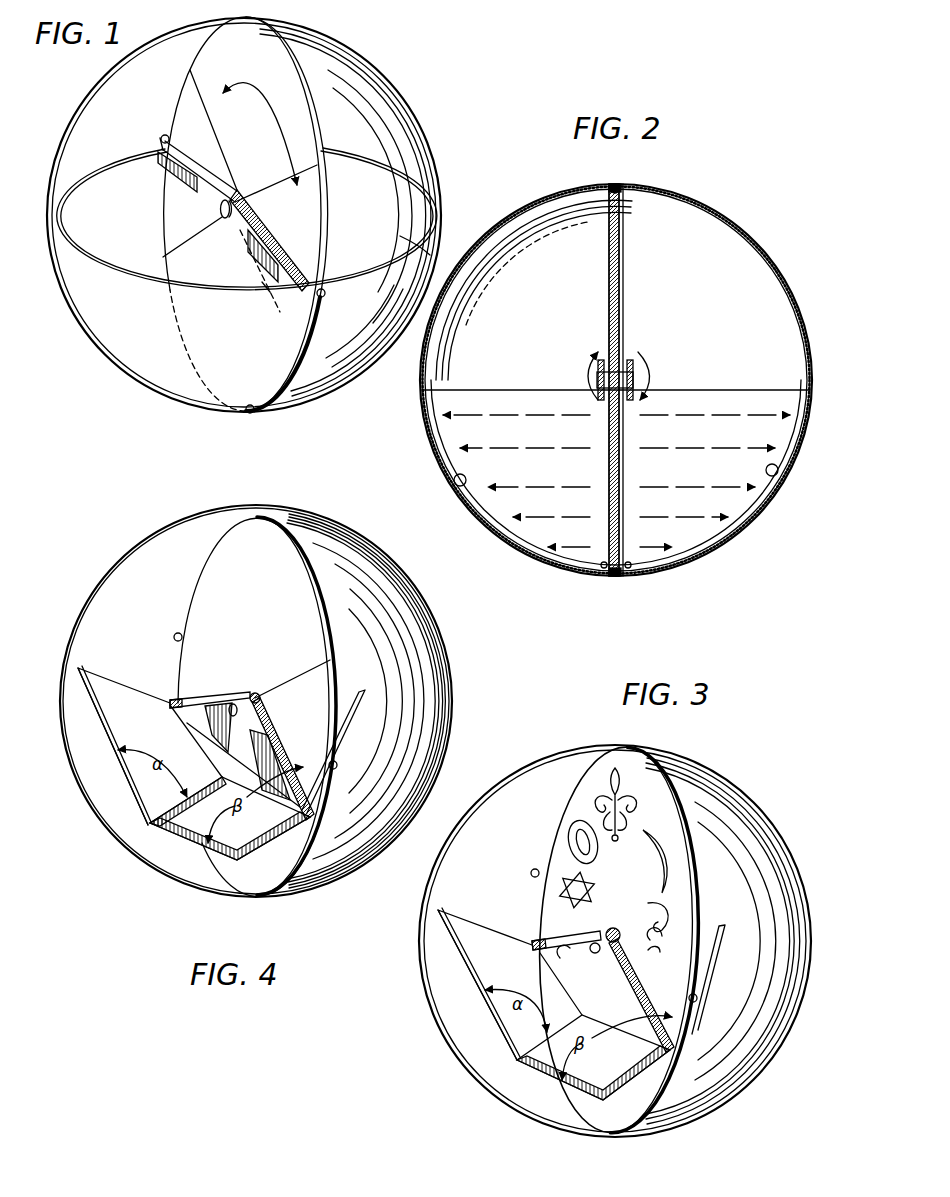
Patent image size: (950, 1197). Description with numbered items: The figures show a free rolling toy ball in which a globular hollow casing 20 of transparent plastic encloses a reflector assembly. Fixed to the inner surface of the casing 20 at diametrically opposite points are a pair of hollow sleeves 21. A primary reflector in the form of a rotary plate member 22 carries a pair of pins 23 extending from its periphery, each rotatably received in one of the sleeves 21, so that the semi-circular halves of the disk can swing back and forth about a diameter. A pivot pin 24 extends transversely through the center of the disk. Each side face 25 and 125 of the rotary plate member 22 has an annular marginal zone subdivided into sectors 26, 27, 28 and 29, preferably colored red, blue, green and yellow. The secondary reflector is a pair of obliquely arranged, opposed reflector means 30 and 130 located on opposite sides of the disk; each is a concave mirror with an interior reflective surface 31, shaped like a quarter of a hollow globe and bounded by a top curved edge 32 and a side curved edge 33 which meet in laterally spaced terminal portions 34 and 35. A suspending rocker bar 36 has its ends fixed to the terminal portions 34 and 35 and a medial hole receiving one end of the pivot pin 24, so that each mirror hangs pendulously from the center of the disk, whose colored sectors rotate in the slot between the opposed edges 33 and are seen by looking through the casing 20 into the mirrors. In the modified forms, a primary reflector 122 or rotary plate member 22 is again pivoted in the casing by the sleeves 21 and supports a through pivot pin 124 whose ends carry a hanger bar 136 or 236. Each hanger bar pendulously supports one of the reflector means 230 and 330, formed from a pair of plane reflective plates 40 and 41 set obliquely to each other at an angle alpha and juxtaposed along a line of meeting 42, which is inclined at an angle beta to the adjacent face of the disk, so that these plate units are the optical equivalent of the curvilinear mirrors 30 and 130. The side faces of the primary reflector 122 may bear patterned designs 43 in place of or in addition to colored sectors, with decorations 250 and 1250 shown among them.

In FIG. 1, the hollow casing 20 is at (427, 121).
In FIG. 2, the hollow casing 20 is at (720, 212).
In FIG. 4, the hollow casing 20 is at (454, 691).
In FIG. 3, the hollow casing 20 is at (743, 789).
In FIG. 1, the hollow sleeves 21 is at (162, 134).
In FIG. 2, the hollow sleeves 21 is at (607, 200).
In FIG. 4, the hollow sleeves 21 is at (175, 633).
In FIG. 3, the hollow sleeves 21 is at (535, 868).
In FIG. 1, the rotary plate member 22 is at (315, 88).
In FIG. 2, the rotary plate member 22 is at (624, 250).
In FIG. 4, the rotary plate member 22 is at (309, 545).
In FIG. 2, the pins 23 is at (623, 184).
In FIG. 1, the pivot pin 24 is at (219, 210).
In FIG. 2, the pivot pin 24 is at (633, 374).
In FIG. 2, the side face 25 is at (609, 290).
In FIG. 2, the side face 125 is at (623, 292).
In FIG. 1, the sector 26 is at (231, 281).
In FIG. 1, the sector 27 is at (202, 143).
In FIG. 1, the sector 28 is at (261, 143).
In FIG. 2, the sector 28 is at (622, 480).
In FIG. 1, the sector 29 is at (302, 223).
In FIG. 1, the reflector means 30 is at (165, 362).
In FIG. 2, the reflector means 30 is at (540, 537).
In FIG. 2, the interior reflective surface 31 is at (458, 485).
In FIG. 1, the top curved edge 32 is at (421, 186).
In FIG. 2, the top curved edge 32 is at (808, 391).
In FIG. 1, the side curved edge 33 is at (277, 410).
In FIG. 2, the side curved edge 33 is at (605, 541).
In FIG. 1, the terminal portion 34 is at (427, 255).
In FIG. 1, the terminal portion 35 is at (160, 138).
In FIG. 2, the terminal portion 35 is at (583, 400).
In FIG. 1, the suspending rocker bar 36 is at (262, 282).
In FIG. 2, the suspending rocker bar 36 is at (602, 404).
In FIG. 1, the reflector means 130 is at (381, 357).
In FIG. 2, the reflector means 130 is at (762, 507).
In FIG. 4, the reflector means 330 is at (353, 690).
In FIG. 3, the reflector means 330 is at (718, 920).
In FIG. 4, the plane reflective plate 40 is at (275, 848).
In FIG. 3, the plane reflective plate 40 is at (653, 1082).
In FIG. 4, the plane reflective plate 41 is at (347, 731).
In FIG. 3, the plane reflective plate 41 is at (455, 945).
In FIG. 4, the line of meeting 42 is at (175, 862).
In FIG. 3, the line of meeting 42 is at (543, 1073).
In FIG. 3, the patterned designs 43 is at (616, 749).
In FIG. 3, the primary reflector 122 is at (673, 790).
In FIG. 4, the pivot pin 124 is at (250, 692).
In FIG. 3, the pivot pin 124 is at (605, 935).
In FIG. 3, the hanger bar 136 is at (537, 934).
In FIG. 4, the reflector means 230 is at (148, 828).
In FIG. 3, the reflector means 230 is at (517, 1060).
In FIG. 4, the hanger bar 236 is at (172, 700).
In FIG. 3, the ring decoration 250 is at (583, 800).
In FIG. 3, the crescent decoration 1250 is at (657, 822).